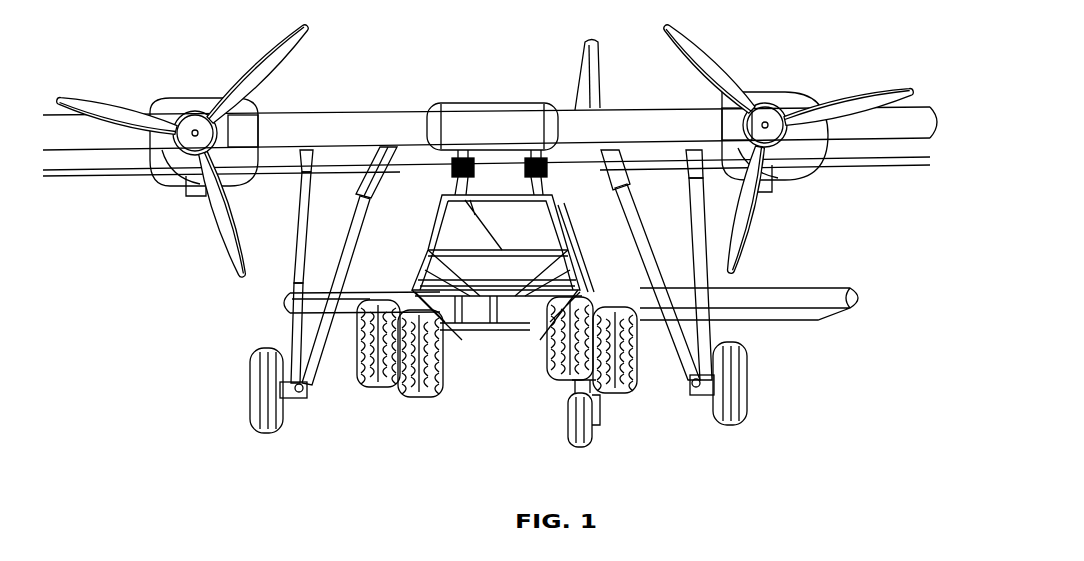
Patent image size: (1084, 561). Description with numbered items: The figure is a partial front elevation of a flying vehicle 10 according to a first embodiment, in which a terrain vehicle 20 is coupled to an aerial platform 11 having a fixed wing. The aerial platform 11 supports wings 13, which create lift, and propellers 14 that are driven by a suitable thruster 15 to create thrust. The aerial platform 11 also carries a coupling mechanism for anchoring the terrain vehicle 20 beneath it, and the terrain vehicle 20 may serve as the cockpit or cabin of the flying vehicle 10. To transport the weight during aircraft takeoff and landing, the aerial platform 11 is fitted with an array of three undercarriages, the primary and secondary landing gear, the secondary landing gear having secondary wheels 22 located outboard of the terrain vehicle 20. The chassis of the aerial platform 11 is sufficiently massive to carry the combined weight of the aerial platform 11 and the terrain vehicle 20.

The flying vehicle 10 is at (500, 282).
The aerial platform 11 is at (500, 205).
The wings 13 is at (905, 148).
The propellers 14 is at (228, 250).
The thruster 15 is at (185, 200).
The terrain vehicle 20 is at (505, 388).
The secondary wheels 22 is at (255, 402).